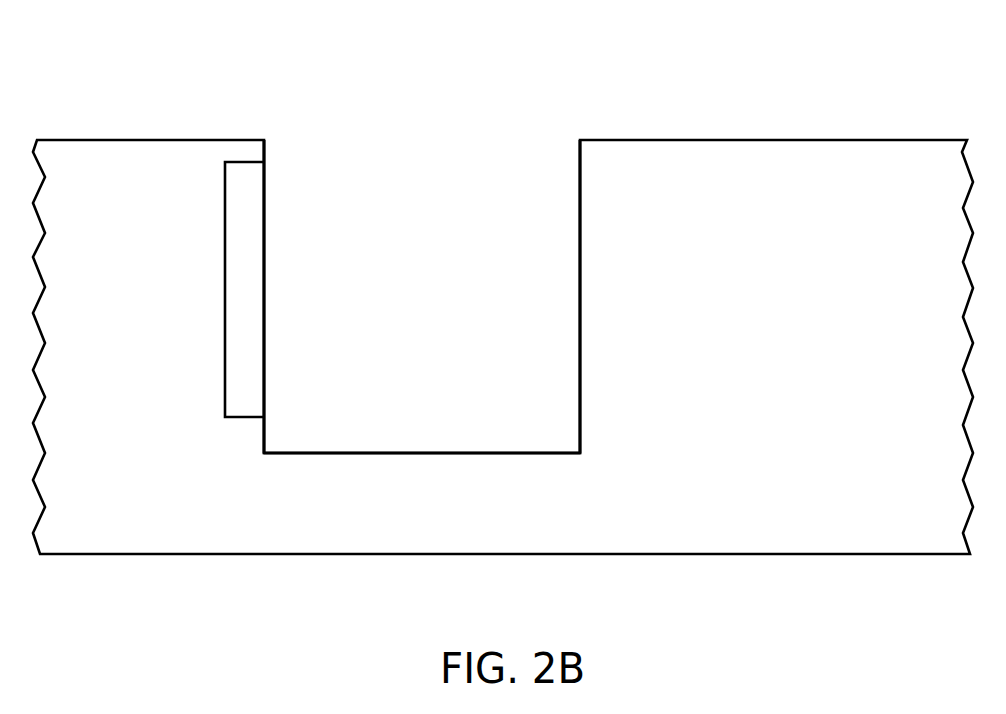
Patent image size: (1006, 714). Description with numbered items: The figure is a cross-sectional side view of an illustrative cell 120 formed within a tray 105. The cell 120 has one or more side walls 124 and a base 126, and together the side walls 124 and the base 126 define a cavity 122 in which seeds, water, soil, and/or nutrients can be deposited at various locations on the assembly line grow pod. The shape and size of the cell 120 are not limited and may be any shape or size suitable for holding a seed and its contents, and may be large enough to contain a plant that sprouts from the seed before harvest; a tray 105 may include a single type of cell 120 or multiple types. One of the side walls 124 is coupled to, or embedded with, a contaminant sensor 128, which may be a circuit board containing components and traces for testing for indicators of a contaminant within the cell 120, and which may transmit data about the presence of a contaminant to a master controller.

The tray 105 is at (503, 292).
The cell 120 is at (422, 229).
The cavity 122 is at (511, 286).
The side walls 124 is at (321, 296).
The base 126 is at (422, 393).
The contaminant sensor 128 is at (294, 279).